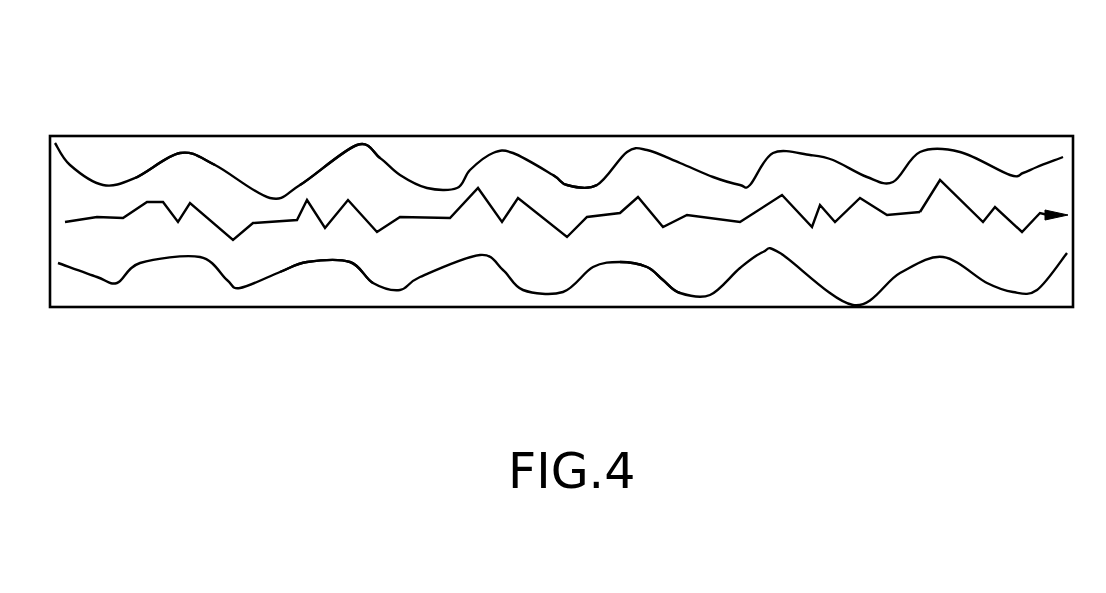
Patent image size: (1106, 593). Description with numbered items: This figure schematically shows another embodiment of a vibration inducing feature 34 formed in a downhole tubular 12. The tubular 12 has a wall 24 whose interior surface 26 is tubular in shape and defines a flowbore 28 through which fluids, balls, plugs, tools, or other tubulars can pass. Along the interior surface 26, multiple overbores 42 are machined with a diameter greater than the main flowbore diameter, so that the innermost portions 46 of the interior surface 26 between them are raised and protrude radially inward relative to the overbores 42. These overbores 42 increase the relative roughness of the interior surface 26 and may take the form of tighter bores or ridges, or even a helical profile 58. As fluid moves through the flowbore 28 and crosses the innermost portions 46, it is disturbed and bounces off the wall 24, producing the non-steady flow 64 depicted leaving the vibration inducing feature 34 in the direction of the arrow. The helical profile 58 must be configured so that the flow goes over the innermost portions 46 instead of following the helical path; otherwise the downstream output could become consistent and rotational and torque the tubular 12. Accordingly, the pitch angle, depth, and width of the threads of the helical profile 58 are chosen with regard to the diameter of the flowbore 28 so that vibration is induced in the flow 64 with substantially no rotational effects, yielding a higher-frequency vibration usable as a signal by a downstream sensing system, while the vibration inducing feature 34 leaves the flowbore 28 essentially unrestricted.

The tubular 12 is at (823, 152).
The wall 24 is at (762, 295).
The interior surface 26 is at (655, 275).
The flowbore 28 is at (847, 265).
The vibration inducing feature 34 is at (322, 262).
The overbores 42 is at (185, 153).
The innermost portions 46 is at (568, 185).
The helical profile 58 is at (332, 151).
The non-steady flow 64 is at (988, 214).